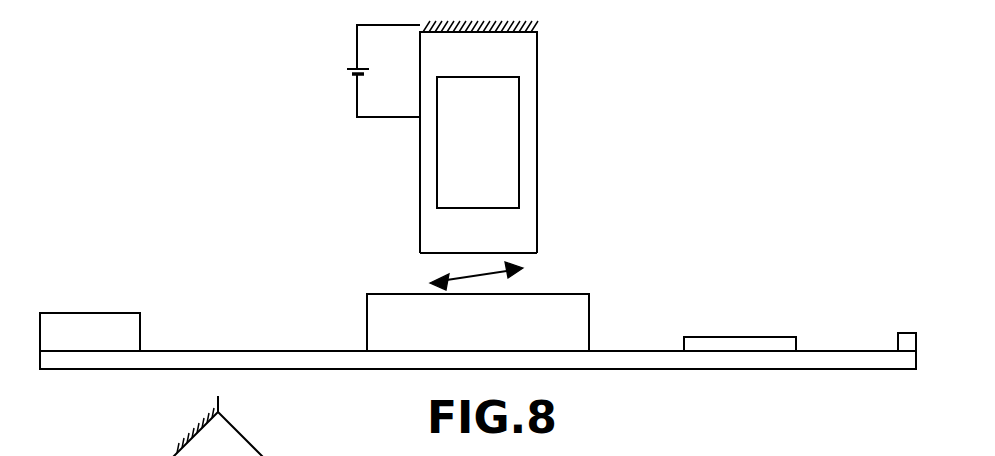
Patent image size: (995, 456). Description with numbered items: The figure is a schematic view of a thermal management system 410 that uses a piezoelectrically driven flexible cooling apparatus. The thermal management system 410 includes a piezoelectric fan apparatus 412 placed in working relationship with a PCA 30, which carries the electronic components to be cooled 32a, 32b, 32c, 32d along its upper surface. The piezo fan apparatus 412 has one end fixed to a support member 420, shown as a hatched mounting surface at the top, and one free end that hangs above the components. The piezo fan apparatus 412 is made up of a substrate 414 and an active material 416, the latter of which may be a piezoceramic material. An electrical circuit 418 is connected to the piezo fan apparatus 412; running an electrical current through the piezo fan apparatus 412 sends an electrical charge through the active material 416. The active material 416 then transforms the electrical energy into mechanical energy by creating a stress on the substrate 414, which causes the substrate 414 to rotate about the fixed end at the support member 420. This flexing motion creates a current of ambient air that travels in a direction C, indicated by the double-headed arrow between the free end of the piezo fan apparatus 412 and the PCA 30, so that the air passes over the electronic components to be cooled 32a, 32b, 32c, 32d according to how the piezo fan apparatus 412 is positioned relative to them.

The thermal management system 410 is at (785, 150).
The piezoelectric fan apparatus 412 is at (517, 62).
The substrate 414 is at (523, 222).
The active material 416 is at (503, 118).
The electrical circuit 418 is at (390, 117).
The support member 420 is at (540, 22).
The direction C is at (477, 277).
The PCA 30 is at (883, 360).
The electronic component to be cooled 32a is at (140, 323).
The electronic component to be cooled 32b is at (373, 331).
The electronic component to be cooled 32c is at (740, 337).
The electronic component to be cooled 32d is at (908, 333).